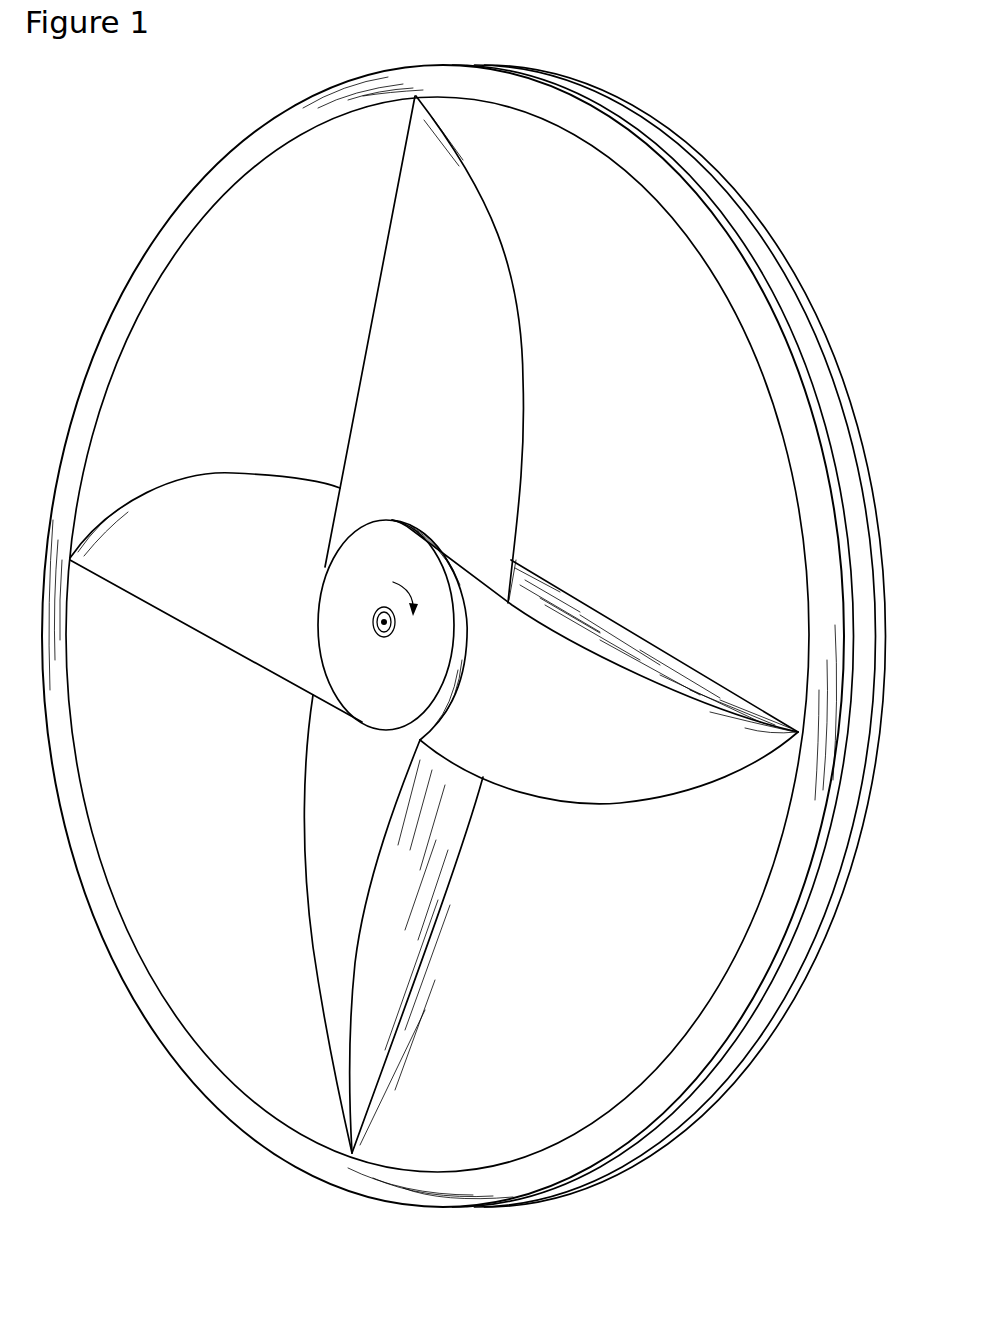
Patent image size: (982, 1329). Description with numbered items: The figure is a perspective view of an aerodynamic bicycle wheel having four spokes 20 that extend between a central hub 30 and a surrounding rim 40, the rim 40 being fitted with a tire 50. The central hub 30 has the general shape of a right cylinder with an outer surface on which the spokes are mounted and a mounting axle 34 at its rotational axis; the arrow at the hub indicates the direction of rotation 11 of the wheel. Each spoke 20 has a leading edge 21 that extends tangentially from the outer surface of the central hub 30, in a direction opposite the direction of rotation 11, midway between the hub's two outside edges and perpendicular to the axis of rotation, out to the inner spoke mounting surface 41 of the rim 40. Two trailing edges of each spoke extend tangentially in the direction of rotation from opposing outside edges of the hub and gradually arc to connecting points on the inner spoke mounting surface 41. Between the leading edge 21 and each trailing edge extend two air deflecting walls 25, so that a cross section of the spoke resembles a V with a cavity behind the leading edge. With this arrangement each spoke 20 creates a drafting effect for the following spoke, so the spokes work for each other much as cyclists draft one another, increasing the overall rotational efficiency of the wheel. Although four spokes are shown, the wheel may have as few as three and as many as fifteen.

The direction of rotation 11 is at (392, 592).
The spoke 20 is at (468, 307).
The leading edge 21 is at (733, 777).
The air deflecting wall 25 is at (566, 772).
The central hub 30 is at (367, 692).
The mounting axle 34 is at (380, 634).
The rim 40 is at (805, 600).
The inner spoke mounting surface 41 is at (377, 103).
The tire 50 is at (768, 312).